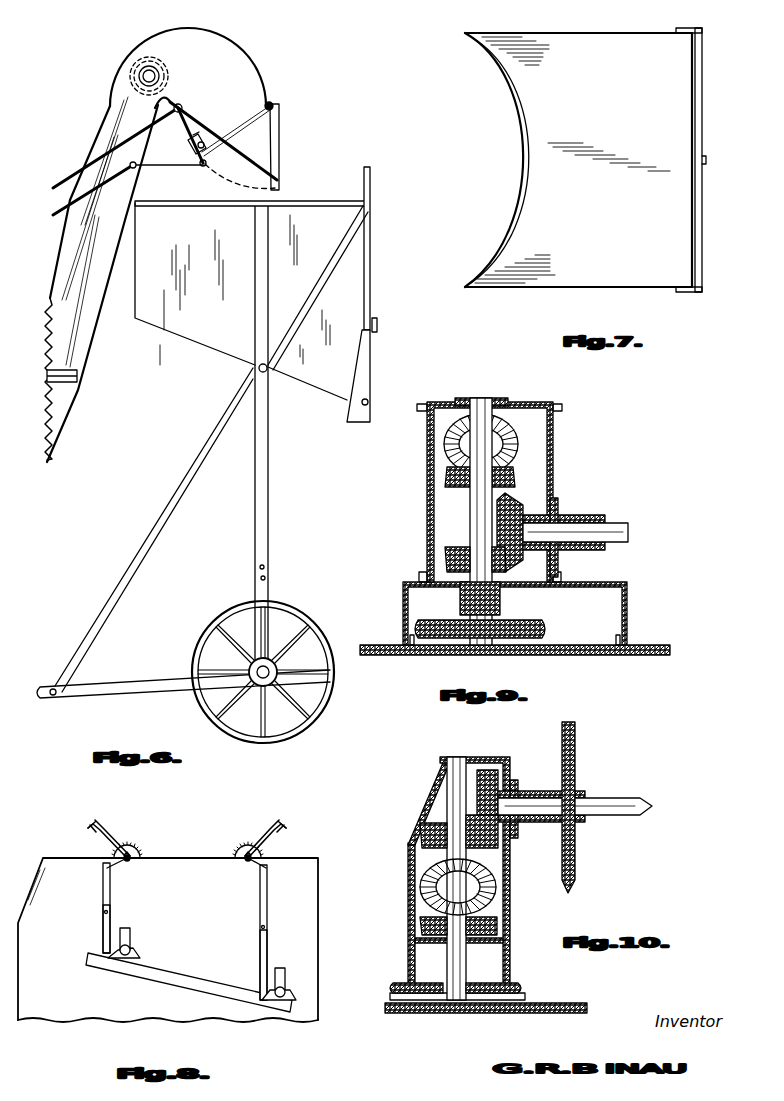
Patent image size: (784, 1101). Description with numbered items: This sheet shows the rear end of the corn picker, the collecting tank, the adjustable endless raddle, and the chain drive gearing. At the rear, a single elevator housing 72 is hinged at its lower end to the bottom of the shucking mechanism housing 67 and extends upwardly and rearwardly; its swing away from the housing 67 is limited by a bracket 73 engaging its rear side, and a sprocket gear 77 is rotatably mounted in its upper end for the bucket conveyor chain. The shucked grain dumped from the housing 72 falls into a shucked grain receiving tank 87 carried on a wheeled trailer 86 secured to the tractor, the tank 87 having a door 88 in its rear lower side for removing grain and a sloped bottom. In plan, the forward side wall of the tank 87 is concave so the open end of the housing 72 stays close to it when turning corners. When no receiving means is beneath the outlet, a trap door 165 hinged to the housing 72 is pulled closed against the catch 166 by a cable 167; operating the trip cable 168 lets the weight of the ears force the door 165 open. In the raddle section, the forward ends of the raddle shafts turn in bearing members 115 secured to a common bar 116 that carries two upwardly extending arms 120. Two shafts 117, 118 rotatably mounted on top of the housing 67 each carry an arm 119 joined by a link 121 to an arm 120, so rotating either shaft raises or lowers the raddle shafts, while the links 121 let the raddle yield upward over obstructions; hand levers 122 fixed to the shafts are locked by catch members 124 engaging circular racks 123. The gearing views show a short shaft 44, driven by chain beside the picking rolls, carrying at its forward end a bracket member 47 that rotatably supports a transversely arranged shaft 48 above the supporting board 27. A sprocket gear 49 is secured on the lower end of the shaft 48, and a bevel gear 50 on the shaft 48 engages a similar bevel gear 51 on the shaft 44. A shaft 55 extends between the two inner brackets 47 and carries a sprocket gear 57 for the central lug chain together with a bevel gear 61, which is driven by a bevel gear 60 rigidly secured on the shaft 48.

In FIG. 9, the supporting board 27 is at (650, 645).
In FIG. 10, the supporting board 27 is at (556, 1002).
In FIG. 9, the short shaft 44 is at (620, 522).
In FIG. 9, the bracket member 47 is at (428, 500).
In FIG. 9, the transversely arranged shaft 48 is at (470, 514).
In FIG. 10, the transversely arranged shaft 48 is at (447, 790).
In FIG. 9, the sprocket gear 49 is at (538, 625).
In FIG. 10, the sprocket gear 49 is at (481, 983).
In FIG. 9, the bevel gear 50 is at (466, 560).
In FIG. 10, the bevel gear 50 is at (497, 930).
In FIG. 9, the bevel gear 51 is at (518, 503).
In FIG. 10, the bevel gear 51 is at (497, 878).
In FIG. 10, the shaft 55 is at (626, 798).
In FIG. 10, the sprocket gear 57 is at (576, 846).
In FIG. 9, the bevel gear 60 is at (513, 479).
In FIG. 10, the bevel gear 60 is at (422, 832).
In FIG. 9, the bevel gear 61 is at (513, 440).
In FIG. 10, the bevel gear 61 is at (499, 762).
In FIG. 8, the housing 67 is at (168, 940).
In FIG. 6, the elevator housing 72 is at (117, 146).
In FIG. 6, the bracket 73 is at (47, 375).
In FIG. 6, the sprocket gear 77 is at (132, 67).
In FIG. 6, the wheeled trailer 86 is at (266, 592).
In FIG. 6, the shucked grain receiving tank 87 is at (241, 301).
In FIG. 7, the shucked grain receiving tank 87 is at (578, 160).
In FIG. 6, the door 88 is at (368, 375).
In FIG. 7, the door 88 is at (702, 232).
In FIG. 8, the bearing member 115 is at (133, 955).
In FIG. 8, the bar 116 is at (220, 988).
In FIG. 8, the shaft 117 is at (136, 844).
In FIG. 8, the shaft 118 is at (243, 841).
In FIG. 8, the arm 119 is at (125, 866).
In FIG. 8, the upwardly extending arm 120 is at (103, 935).
In FIG. 8, the link 121 is at (110, 898).
In FIG. 8, the hand lever 122 is at (187, 838).
In FIG. 8, the circular rack 123 is at (143, 851).
In FIG. 8, the catch member 124 is at (104, 845).
In FIG. 6, the trap door 165 is at (280, 137).
In FIG. 6, the catch 166 is at (204, 174).
In FIG. 6, the cable 167 is at (208, 133).
In FIG. 6, the trip cable 168 is at (57, 220).